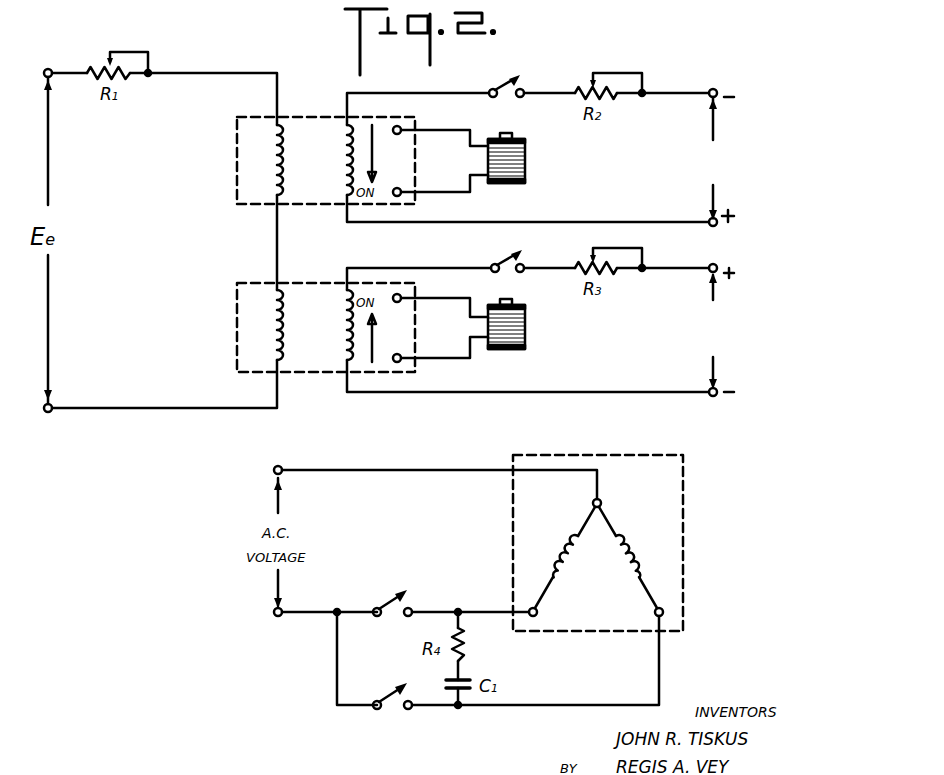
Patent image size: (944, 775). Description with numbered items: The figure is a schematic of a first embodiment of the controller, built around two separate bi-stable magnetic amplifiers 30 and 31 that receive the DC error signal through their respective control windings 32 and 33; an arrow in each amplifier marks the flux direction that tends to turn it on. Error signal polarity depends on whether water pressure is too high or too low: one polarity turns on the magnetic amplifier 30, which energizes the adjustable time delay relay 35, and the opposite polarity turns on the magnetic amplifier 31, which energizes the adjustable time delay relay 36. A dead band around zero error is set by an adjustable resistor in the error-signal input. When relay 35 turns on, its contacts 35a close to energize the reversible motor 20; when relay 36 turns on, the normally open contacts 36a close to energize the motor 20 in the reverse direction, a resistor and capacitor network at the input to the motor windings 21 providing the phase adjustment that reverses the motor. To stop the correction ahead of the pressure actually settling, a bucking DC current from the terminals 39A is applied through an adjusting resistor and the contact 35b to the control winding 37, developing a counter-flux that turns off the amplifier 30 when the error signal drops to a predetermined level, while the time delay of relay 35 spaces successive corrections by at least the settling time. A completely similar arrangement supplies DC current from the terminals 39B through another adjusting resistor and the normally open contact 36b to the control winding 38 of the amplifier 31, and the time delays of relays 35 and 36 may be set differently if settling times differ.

The reversible motor 20 is at (621, 543).
The motor windings 21 is at (560, 558).
The bi-stable magnetic amplifier 30 is at (308, 116).
The bi-stable magnetic amplifier 31 is at (318, 368).
The control winding 32 is at (285, 160).
The control winding 33 is at (286, 327).
The adjustable time delay relay 35 is at (527, 157).
The adjustable time delay relay 36 is at (527, 329).
The contacts 35a is at (390, 594).
The normally open contact 35b is at (505, 77).
The normally open contacts 36a is at (386, 687).
The normally open contact 36b is at (502, 262).
The control winding 37 is at (340, 168).
The control winding 38 is at (340, 343).
The terminals 39A is at (719, 90).
The terminals 39B is at (718, 263).